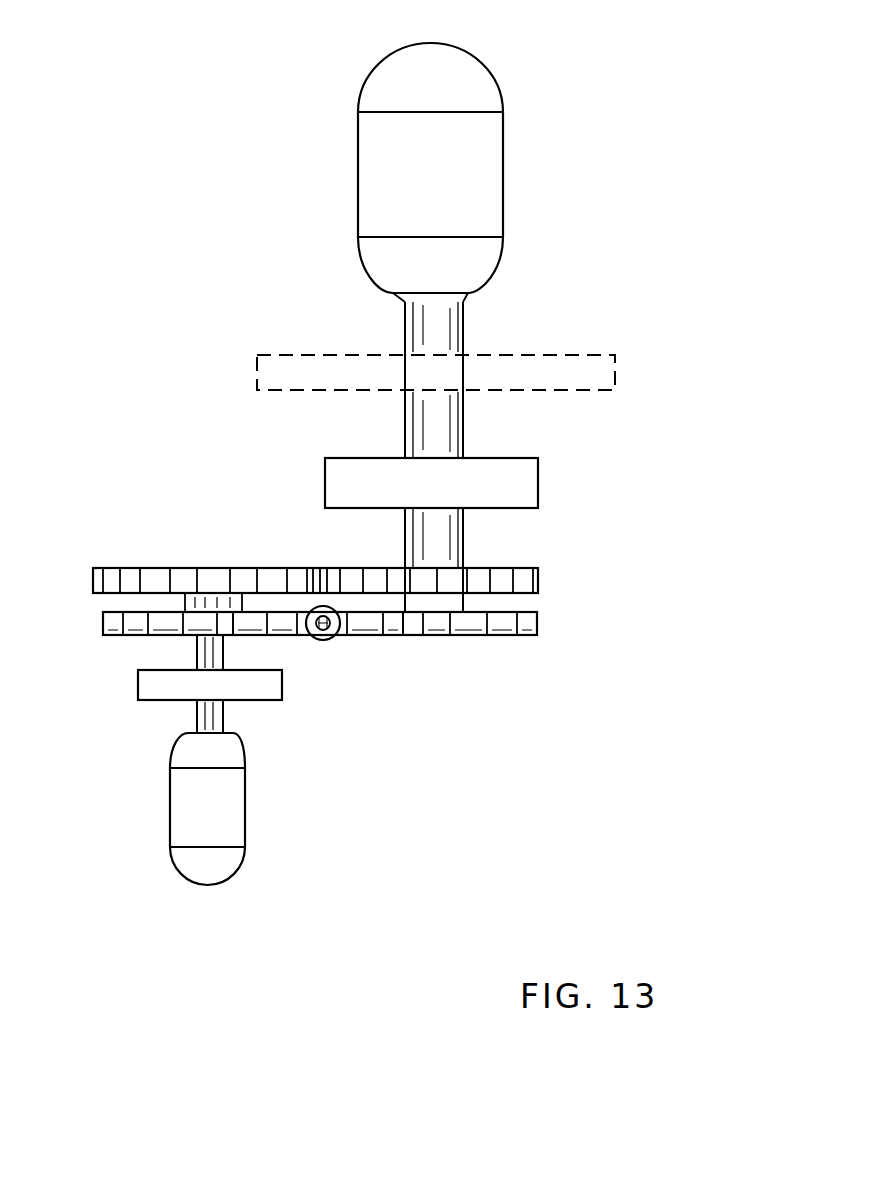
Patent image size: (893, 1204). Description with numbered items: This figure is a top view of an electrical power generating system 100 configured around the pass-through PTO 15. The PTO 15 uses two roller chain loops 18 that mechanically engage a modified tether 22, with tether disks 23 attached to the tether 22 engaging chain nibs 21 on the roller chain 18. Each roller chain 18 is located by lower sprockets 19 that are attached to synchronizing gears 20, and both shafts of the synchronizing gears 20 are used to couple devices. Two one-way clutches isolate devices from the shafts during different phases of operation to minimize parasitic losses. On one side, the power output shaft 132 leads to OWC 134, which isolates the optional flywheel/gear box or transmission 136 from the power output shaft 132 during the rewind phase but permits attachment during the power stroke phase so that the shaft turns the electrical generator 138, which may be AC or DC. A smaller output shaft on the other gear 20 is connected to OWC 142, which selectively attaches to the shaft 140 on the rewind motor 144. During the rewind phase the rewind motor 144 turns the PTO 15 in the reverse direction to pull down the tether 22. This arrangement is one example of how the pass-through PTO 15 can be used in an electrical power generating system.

The drive system 100 is at (612, 68).
The electrical generator 138 is at (488, 192).
The flywheel/gear box 136 is at (612, 360).
The output shaft 132 is at (473, 426).
The one-way clutch 134 is at (528, 490).
The synchronizing gears 20 is at (185, 576).
The pass-through PTO 15 is at (573, 597).
The roller chain 18 is at (170, 628).
The chain nibs 21 is at (106, 628).
The tether 22 is at (324, 624).
The tether disks 23 is at (320, 630).
The lower sprockets 19 is at (238, 642).
The shaft 140 is at (190, 712).
The one-way clutch 142 is at (138, 685).
The rewind motor 144 is at (233, 791).